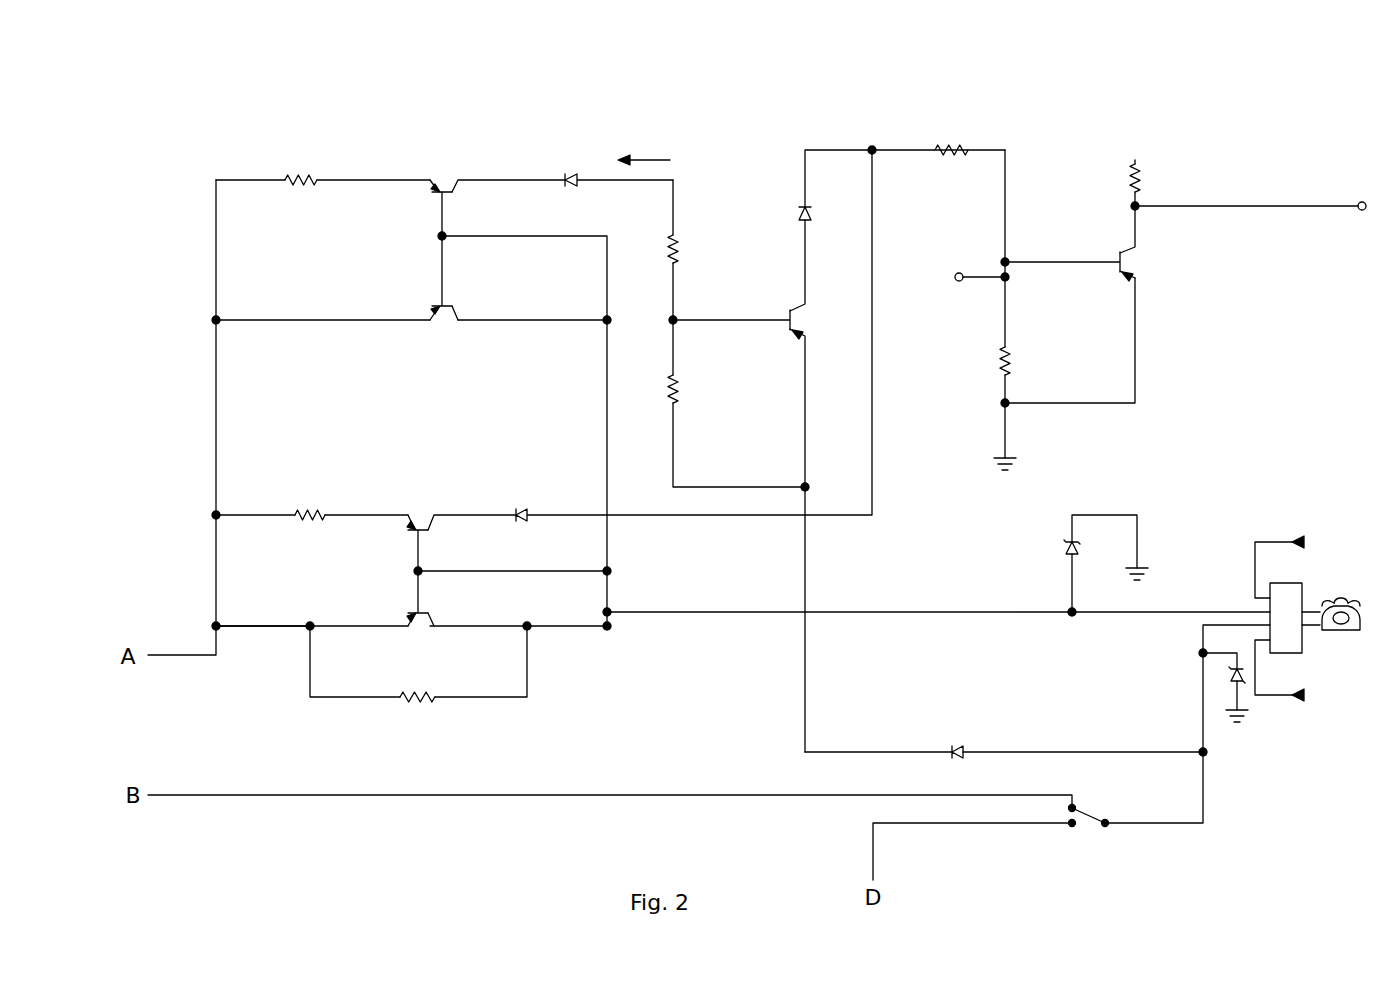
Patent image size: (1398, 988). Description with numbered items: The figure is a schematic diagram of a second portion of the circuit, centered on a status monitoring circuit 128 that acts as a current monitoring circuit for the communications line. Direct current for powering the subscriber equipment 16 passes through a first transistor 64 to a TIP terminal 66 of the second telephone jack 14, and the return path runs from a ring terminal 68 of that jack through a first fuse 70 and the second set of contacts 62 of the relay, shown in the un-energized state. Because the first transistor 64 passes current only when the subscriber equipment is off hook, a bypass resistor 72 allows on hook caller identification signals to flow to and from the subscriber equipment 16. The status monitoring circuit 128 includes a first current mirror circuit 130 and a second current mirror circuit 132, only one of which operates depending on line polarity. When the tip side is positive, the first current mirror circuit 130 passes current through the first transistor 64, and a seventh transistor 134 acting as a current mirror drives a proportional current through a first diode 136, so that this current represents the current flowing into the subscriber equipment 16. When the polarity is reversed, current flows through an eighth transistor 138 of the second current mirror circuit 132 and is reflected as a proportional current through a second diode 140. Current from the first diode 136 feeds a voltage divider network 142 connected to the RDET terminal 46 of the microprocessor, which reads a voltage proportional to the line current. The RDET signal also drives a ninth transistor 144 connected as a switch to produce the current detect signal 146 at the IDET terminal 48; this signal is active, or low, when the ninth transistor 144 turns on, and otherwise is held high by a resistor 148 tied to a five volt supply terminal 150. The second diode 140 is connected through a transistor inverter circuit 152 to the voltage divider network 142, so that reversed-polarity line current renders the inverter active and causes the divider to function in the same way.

The status monitoring circuit 128 is at (704, 120).
The first current mirror circuit 130 is at (284, 605).
The second current mirror circuit 132 is at (370, 216).
The seventh transistor 134 is at (430, 520).
The first diode 136 is at (522, 512).
The eighth transistor 138 is at (453, 314).
The second diode 140 is at (572, 180).
The voltage divider network 142 is at (1042, 141).
The ninth transistor 144 is at (1138, 268).
The current detect signal 146 is at (1243, 208).
The resistor 148 is at (1140, 172).
The five volt supply terminal 150 is at (1135, 163).
The transistor inverter circuit 152 is at (745, 192).
The RDET terminal 46 is at (958, 283).
The IDET terminal 48 is at (1364, 212).
The second set of contacts 62 is at (1099, 810).
The first transistor 64 is at (430, 613).
The TIP terminal 66 is at (1263, 608).
The ring terminal 68 is at (1263, 640).
The first fuse 70 is at (1203, 697).
The bypass resistor 72 is at (424, 700).
The second telephone jack 14 is at (1305, 591).
The subscriber equipment 16 is at (1334, 633).